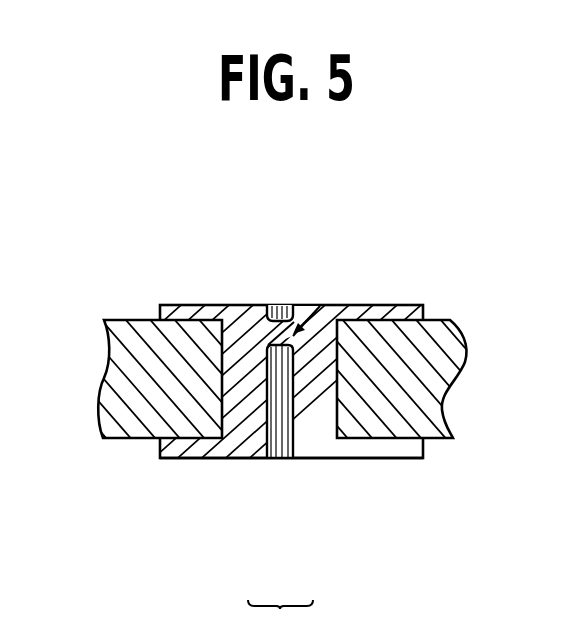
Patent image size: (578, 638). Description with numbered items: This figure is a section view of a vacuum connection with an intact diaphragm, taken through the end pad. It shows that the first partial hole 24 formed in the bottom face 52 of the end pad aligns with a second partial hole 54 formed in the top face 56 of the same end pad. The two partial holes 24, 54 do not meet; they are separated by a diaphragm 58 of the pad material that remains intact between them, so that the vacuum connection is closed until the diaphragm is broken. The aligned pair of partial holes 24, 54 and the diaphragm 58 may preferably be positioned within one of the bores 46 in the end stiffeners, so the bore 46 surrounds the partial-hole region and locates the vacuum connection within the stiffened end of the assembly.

The first partial hole 24 is at (278, 458).
The bore 46 is at (280, 619).
The bottom face 52 is at (202, 458).
The second partial hole 54 is at (280, 305).
The top face 56 is at (212, 305).
The diaphragm 58 is at (328, 305).